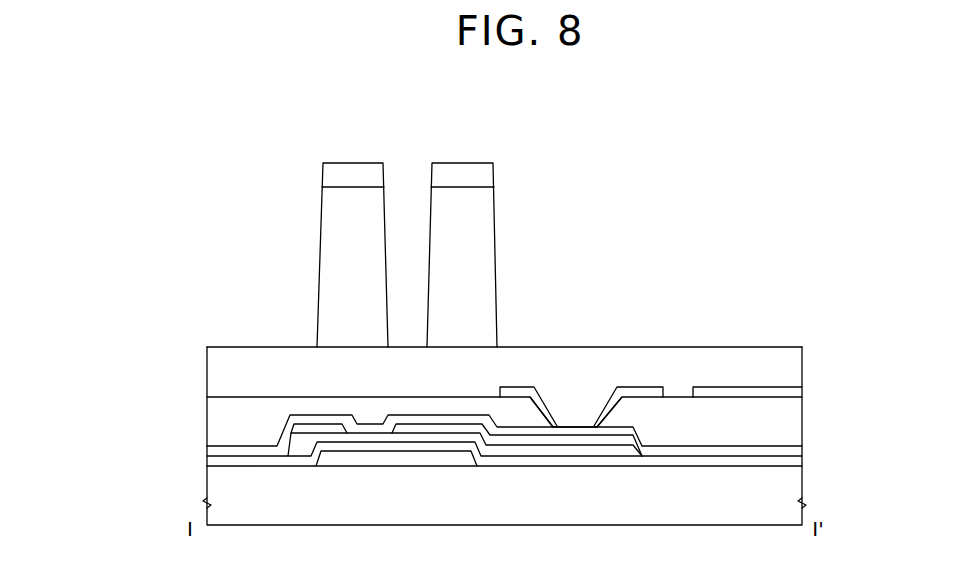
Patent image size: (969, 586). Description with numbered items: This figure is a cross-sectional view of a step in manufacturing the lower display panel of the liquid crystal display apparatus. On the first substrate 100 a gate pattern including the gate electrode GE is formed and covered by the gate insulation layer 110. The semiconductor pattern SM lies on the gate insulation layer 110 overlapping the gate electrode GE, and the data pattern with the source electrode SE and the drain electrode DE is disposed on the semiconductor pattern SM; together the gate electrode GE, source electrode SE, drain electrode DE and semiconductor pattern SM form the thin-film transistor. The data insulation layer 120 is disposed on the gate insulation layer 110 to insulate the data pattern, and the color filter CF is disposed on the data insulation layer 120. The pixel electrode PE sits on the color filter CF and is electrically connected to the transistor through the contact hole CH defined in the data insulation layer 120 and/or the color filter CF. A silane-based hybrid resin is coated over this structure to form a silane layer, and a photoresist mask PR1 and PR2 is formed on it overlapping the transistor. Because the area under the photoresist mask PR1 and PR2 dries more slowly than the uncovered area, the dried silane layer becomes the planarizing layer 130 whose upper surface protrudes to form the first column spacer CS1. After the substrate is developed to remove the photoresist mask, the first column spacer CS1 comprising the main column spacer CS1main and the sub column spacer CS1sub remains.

The first substrate 100 is at (802, 495).
The gate insulation layer 110 is at (802, 463).
The data insulation layer 120 is at (802, 452).
The planarizing layer 130 is at (802, 367).
The color filter CF is at (802, 424).
The gate electrode GE is at (370, 458).
The semiconductor pattern SM is at (422, 440).
The source electrode SE is at (326, 428).
The drain electrode DE is at (462, 429).
The contact hole CH is at (574, 412).
The pixel electrode PE is at (590, 432).
The photoresist mask PR1 is at (357, 172).
The photoresist mask PR2 is at (462, 172).
The first column spacer CS1 is at (268, 224).
The main column spacer CS1main is at (237, 224).
The sub column spacer CS1sub is at (296, 224).